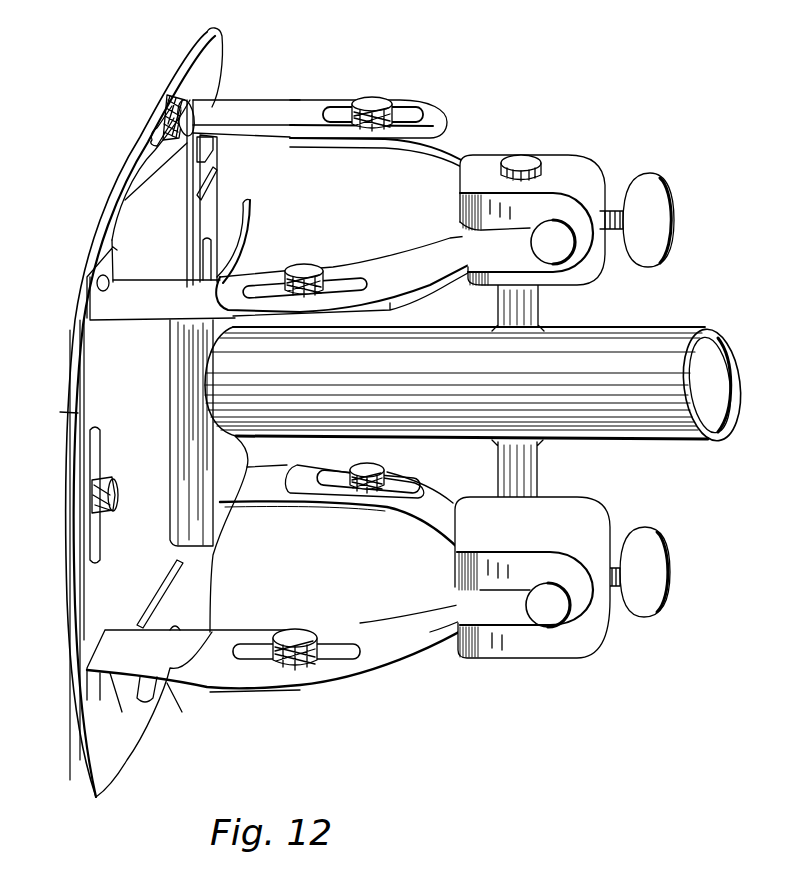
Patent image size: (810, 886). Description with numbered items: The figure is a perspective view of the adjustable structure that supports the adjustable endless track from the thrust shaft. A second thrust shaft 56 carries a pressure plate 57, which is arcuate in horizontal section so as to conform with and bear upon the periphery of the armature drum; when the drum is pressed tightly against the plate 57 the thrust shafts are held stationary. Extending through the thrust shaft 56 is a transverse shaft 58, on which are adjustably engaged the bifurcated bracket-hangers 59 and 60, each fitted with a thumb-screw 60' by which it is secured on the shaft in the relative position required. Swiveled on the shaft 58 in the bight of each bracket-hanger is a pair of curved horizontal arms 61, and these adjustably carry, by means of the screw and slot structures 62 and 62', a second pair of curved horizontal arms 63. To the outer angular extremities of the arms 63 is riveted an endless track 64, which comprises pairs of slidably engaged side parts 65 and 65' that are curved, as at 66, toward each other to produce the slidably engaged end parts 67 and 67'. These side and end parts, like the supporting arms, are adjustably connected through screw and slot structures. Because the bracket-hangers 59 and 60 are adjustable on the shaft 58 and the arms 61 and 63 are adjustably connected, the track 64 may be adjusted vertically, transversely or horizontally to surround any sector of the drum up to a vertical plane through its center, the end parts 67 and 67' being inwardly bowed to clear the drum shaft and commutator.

The second thrust shaft 56 is at (627, 337).
The pressure plate 57 is at (247, 258).
The transverse shaft 58 is at (541, 305).
The bifurcated bracket-hanger 59 is at (563, 162).
The bifurcated bracket-hanger 60 is at (532, 592).
The thumb-screw 60' is at (653, 395).
The curved horizontal arms 61 is at (453, 147).
The screw and slot structure 62 is at (345, 373).
The screw and slot structure 62' is at (349, 372).
The second pair of curved horizontal arms 63 is at (225, 637).
The endless track 64 is at (110, 217).
The side part 65 is at (146, 279).
The side part 65' is at (172, 434).
The curved portion 66 is at (117, 168).
The end part 67 is at (172, 95).
The end part 67' is at (172, 80).